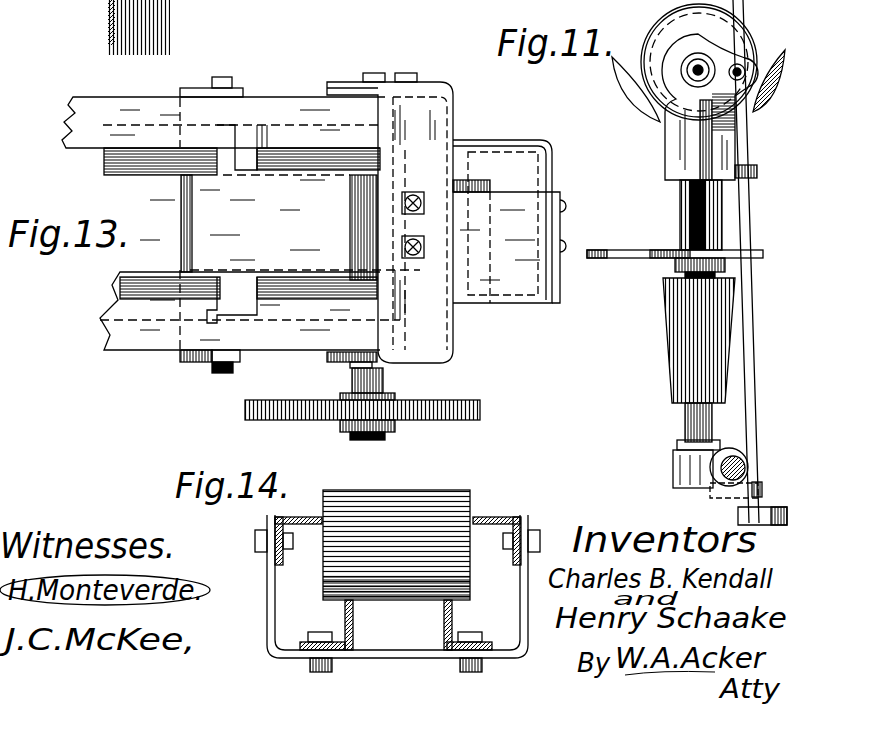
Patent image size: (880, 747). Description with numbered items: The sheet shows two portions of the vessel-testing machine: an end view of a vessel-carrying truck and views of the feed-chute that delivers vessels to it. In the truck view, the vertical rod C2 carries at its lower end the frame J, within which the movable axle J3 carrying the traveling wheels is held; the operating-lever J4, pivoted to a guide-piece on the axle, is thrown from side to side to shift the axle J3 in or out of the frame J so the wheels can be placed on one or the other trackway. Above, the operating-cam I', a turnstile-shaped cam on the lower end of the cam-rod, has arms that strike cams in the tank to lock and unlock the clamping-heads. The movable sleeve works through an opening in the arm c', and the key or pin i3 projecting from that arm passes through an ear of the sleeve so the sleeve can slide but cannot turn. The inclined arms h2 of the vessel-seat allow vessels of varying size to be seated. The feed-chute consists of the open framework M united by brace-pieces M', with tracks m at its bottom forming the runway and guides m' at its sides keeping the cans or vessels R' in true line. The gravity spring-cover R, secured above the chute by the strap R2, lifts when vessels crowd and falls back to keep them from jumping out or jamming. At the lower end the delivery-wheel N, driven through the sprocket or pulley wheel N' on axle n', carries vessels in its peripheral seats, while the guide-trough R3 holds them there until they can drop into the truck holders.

In FIG. 13, the open framework M is at (231, 223).
In FIG. 13, the brace-pieces M' is at (230, 77).
In FIG. 13, the gravity spring-cover R is at (265, 241).
In FIG. 13, the strap R2 is at (455, 88).
In FIG. 13, the guide-trough R3 is at (554, 298).
In FIG. 13, the delivery-wheel N is at (485, 174).
In FIG. 13, the axle n' is at (445, 384).
In FIG. 13, the sprocket or pulley wheel N' is at (396, 420).
In FIG. 14, the tracks m is at (397, 593).
In FIG. 14, the guides m' is at (389, 542).
In FIG. 14, the cans or vessels R' is at (396, 529).
In FIG. 11, the inclined arms h2 is at (636, 90).
In FIG. 11, the arm c' is at (694, 142).
In FIG. 11, the key or pin i3 is at (748, 62).
In FIG. 11, the operating-cam I' is at (675, 235).
In FIG. 11, the vertical rod C2 is at (688, 426).
In FIG. 11, the frame J is at (697, 445).
In FIG. 11, the axle J3 is at (747, 468).
In FIG. 11, the operating-lever J4 is at (753, 336).